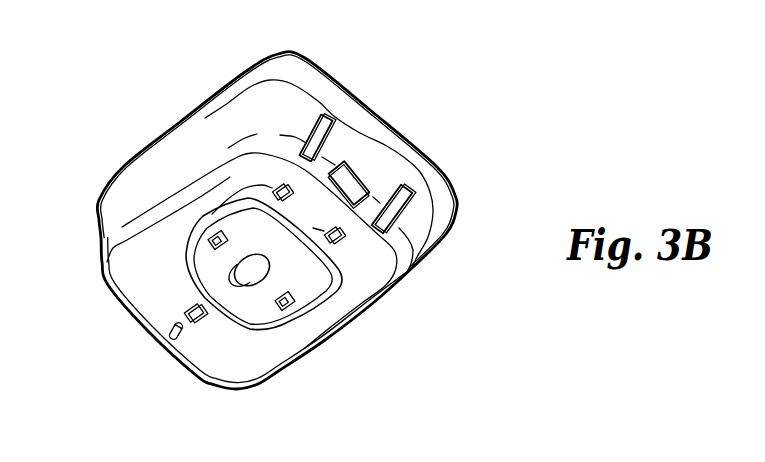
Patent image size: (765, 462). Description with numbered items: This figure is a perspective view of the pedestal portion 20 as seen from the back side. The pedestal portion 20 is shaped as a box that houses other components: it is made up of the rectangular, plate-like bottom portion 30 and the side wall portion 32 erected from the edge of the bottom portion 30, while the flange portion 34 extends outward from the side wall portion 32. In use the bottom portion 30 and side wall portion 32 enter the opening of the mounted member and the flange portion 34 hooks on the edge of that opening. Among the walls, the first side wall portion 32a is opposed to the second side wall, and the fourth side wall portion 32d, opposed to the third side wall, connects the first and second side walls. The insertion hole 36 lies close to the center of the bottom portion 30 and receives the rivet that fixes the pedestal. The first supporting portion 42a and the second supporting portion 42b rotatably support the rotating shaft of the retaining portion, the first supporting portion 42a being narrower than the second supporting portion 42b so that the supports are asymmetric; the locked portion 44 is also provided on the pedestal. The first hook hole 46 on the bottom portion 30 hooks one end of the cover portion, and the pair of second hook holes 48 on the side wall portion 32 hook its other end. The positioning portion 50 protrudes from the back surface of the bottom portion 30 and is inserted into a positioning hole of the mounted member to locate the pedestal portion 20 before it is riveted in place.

The pedestal portion 20 is at (192, 413).
The bottom portion 30 is at (287, 337).
The side wall portion 32 is at (138, 190).
The first side wall portion 32a is at (357, 140).
The fourth side wall portion 32d is at (205, 133).
The flange portion 34 is at (168, 125).
The insertion hole 36 is at (268, 262).
The first supporting portion 42a is at (340, 250).
The second supporting portion 42b is at (281, 190).
The locked portion 44 is at (352, 168).
The first hook hole 46 is at (200, 318).
The second hook holes 48 is at (316, 132).
The positioning portion 50 is at (167, 343).